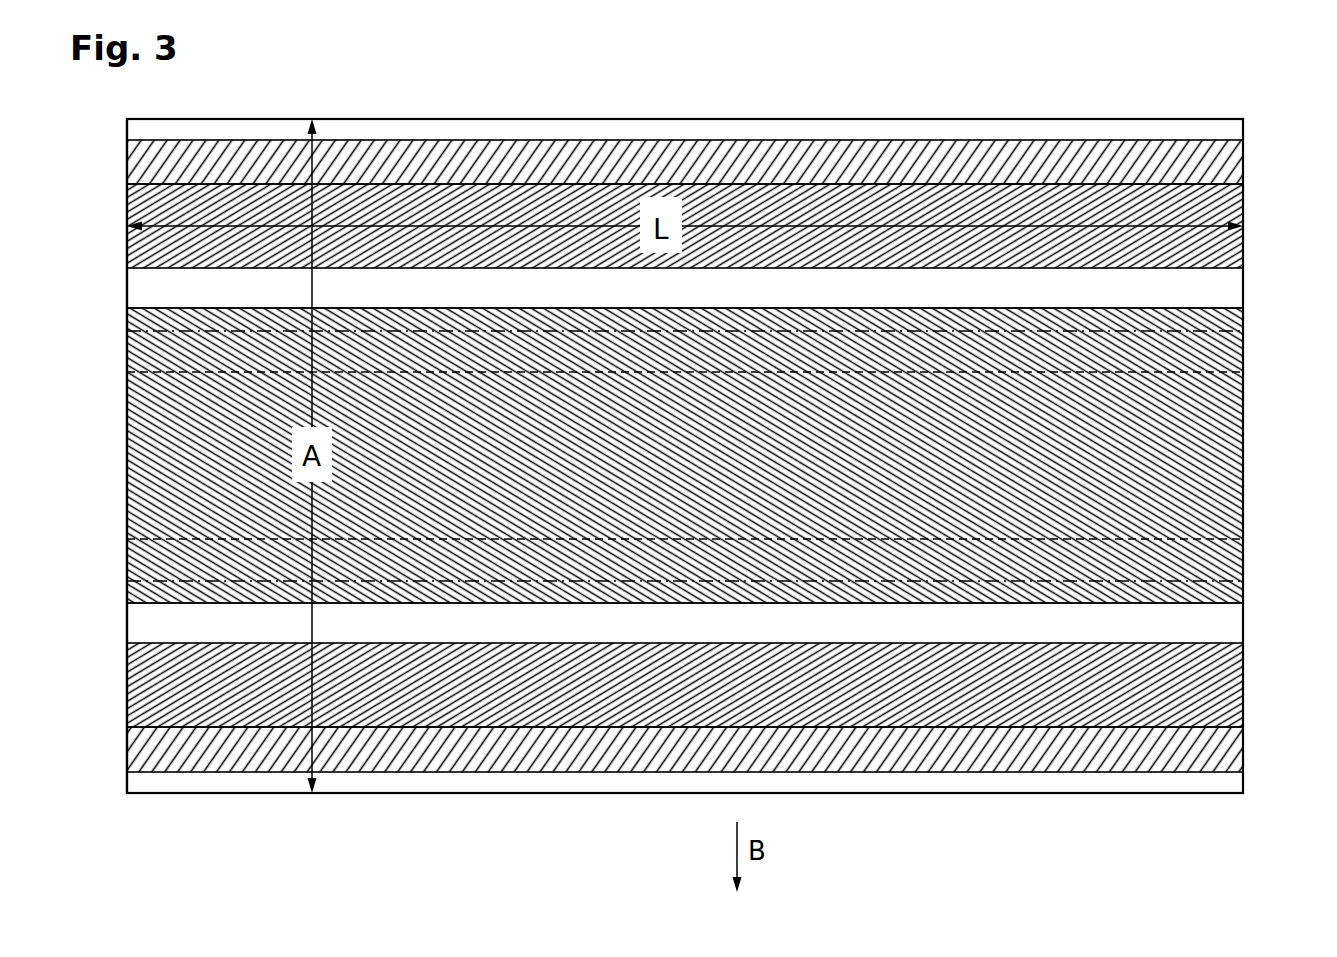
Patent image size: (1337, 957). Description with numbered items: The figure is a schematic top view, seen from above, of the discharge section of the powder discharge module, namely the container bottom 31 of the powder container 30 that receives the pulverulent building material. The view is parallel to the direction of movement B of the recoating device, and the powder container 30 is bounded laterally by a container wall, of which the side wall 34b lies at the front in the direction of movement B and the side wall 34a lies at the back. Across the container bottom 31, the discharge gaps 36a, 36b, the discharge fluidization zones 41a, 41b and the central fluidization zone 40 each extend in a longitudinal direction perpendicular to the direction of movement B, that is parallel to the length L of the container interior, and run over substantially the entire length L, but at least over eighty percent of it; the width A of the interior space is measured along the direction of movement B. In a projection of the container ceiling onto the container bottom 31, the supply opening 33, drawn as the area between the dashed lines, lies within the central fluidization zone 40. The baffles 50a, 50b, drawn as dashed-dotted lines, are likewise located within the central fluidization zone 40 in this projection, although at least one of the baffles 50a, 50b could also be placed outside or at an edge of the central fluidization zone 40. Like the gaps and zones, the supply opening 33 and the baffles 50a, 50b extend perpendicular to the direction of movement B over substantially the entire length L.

The powder container 30 is at (1186, 115).
The container bottom 31 is at (115, 481).
The supply opening 33 is at (1222, 426).
The side wall 34a is at (938, 119).
The side wall 34b is at (897, 793).
The discharge gap 36a is at (1234, 162).
The discharge gap 36b is at (1222, 760).
The central fluidization zone 40 is at (1222, 482).
The discharge fluidization zone 41a is at (1234, 207).
The discharge fluidization zone 41b is at (1222, 700).
The baffle 50a is at (1205, 336).
The baffle 50b is at (1205, 582).